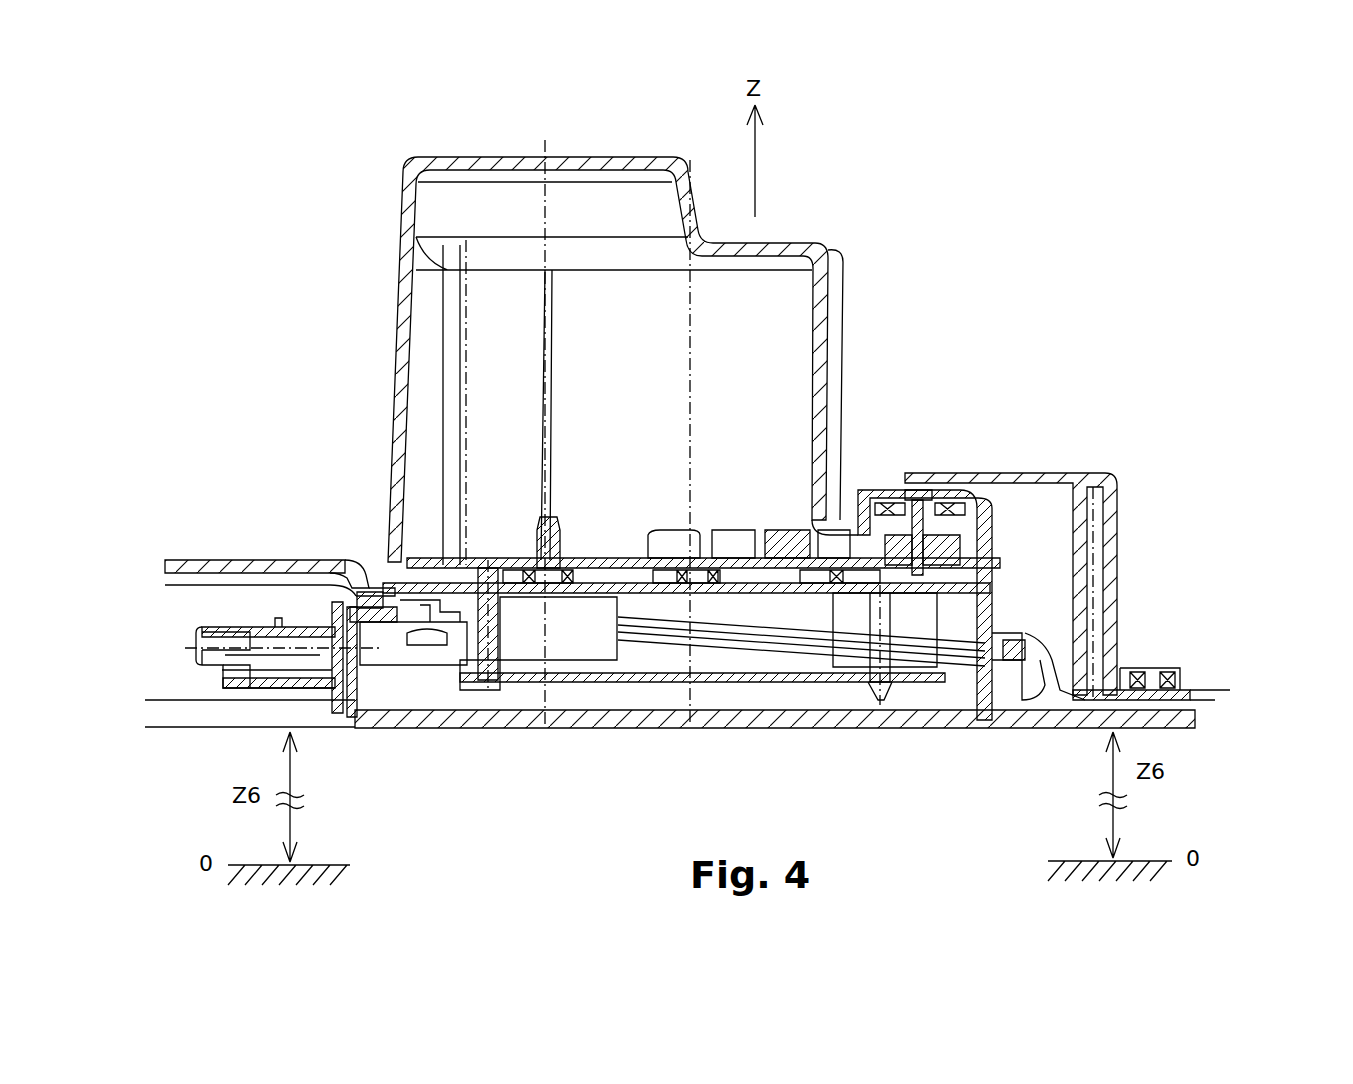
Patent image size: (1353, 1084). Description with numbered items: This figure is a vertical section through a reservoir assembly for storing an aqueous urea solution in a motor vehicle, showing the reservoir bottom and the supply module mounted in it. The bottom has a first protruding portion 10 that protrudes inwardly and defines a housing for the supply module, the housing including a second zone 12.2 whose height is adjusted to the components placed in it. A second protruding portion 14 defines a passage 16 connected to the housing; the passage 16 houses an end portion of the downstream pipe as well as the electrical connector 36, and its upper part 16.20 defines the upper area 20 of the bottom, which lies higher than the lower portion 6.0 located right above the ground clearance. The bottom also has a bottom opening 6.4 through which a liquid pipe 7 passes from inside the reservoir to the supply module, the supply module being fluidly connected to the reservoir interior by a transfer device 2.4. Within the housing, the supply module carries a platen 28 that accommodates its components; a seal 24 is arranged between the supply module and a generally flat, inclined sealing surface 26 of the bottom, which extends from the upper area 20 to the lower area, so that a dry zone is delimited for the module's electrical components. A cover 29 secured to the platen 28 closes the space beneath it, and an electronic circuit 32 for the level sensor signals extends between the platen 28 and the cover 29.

The first protruding portion 10 is at (500, 156).
The second zone 12.2 is at (614, 212).
The second protruding portion 14 is at (205, 558).
The upper part of the passage 16.20 is at (316, 545).
The upper area 20 is at (343, 558).
The sealing surface 26 is at (332, 590).
The electrical connector 36 is at (195, 643).
The passage 16 is at (180, 658).
The platen 28 is at (740, 595).
The electronic circuit 32 is at (847, 684).
The seal 24 is at (978, 658).
The liquid pipe 7 is at (895, 530).
The bottom opening 6.4 is at (952, 515).
The transfer device 2.4 is at (1112, 540).
The lower portion 6.0 is at (1206, 702).
The cover 29 is at (578, 732).